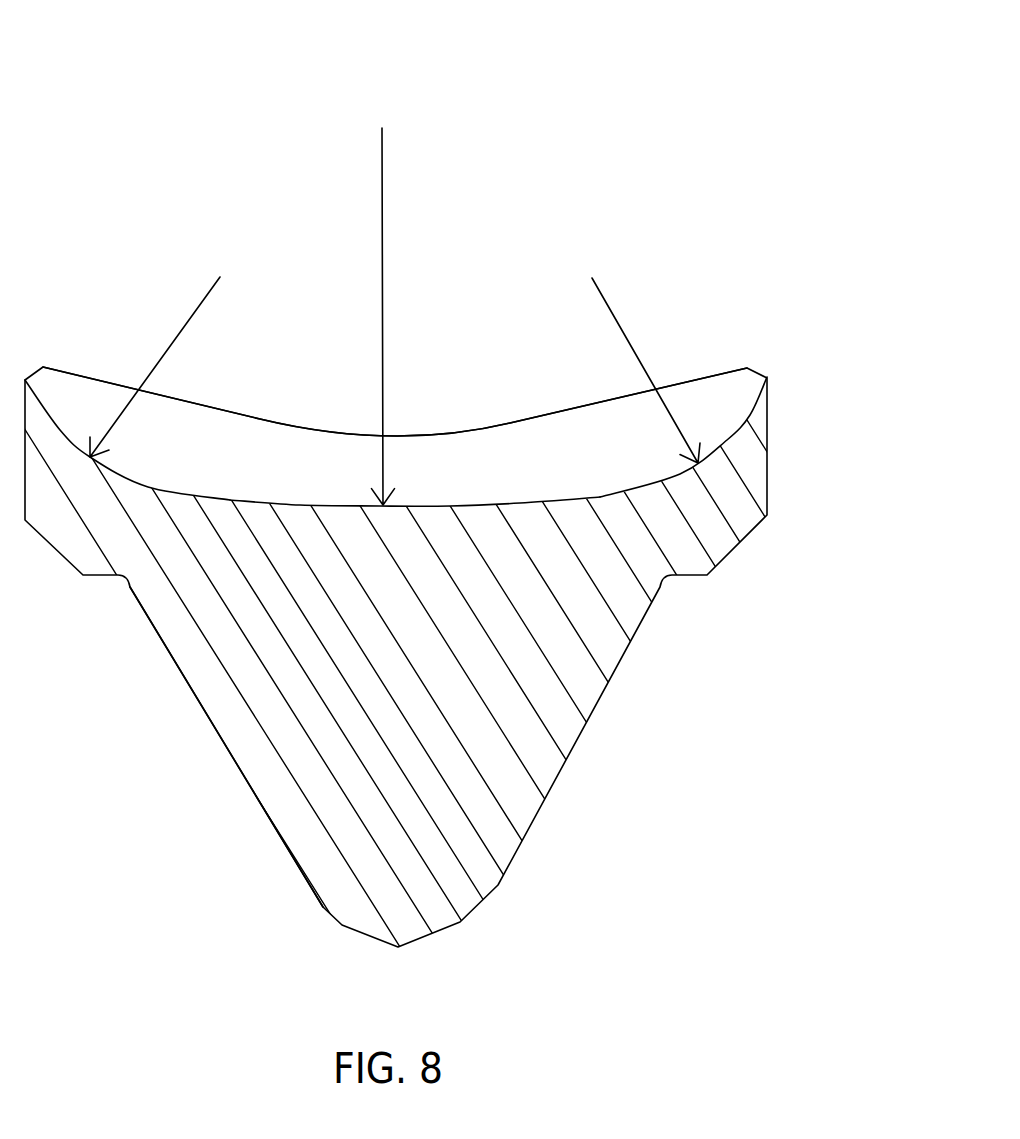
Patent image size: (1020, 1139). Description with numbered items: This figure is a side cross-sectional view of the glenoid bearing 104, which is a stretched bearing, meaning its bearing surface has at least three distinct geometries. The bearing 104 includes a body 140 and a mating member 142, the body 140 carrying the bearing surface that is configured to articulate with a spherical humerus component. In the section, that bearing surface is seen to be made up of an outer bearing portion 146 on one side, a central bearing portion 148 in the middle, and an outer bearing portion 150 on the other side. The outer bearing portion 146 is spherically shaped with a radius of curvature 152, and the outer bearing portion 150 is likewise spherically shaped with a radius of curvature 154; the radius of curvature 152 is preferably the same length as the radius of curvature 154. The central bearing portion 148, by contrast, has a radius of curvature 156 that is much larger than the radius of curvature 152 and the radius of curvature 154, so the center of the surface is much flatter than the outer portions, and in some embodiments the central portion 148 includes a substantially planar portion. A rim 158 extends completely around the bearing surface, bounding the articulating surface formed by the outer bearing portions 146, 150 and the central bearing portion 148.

The glenoid bearing 104 is at (588, 143).
The body 140 is at (757, 413).
The mating member 142 is at (183, 686).
The outer bearing portion 146 is at (47, 398).
The central bearing portion 148 is at (378, 504).
The outer bearing portion 150 is at (682, 475).
The radius of curvature 152 is at (207, 297).
The radius of curvature 154 is at (637, 348).
The radius of curvature 156 is at (383, 258).
The rim 158 is at (530, 418).